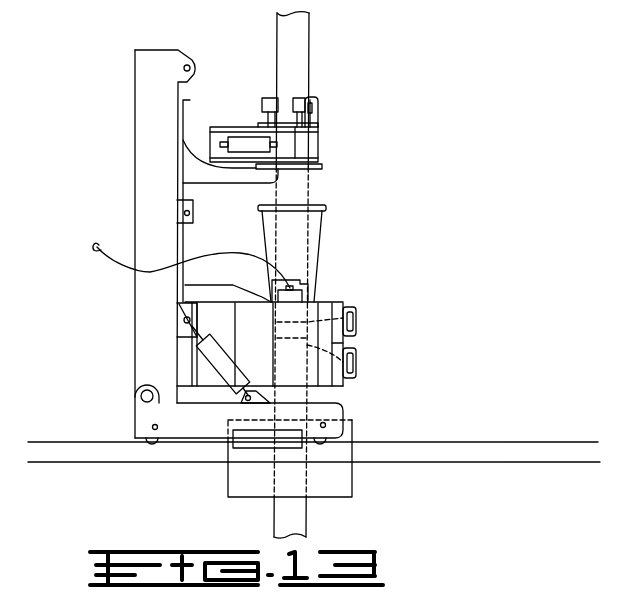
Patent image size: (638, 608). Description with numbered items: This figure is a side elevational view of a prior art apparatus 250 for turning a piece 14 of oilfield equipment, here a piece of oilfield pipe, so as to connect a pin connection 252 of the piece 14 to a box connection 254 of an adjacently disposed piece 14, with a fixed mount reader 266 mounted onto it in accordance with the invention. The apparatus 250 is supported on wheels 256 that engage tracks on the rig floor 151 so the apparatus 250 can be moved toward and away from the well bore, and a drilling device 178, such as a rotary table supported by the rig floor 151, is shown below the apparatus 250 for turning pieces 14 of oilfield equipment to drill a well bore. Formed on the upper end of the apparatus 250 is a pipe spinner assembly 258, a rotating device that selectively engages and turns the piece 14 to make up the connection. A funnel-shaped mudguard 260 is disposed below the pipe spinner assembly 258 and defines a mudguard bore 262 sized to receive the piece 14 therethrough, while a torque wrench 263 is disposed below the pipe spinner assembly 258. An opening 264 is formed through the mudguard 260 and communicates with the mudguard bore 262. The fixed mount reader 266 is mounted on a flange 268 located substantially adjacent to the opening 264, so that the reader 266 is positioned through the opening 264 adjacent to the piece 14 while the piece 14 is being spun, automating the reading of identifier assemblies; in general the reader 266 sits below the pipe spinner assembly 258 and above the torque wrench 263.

The piece of oilfield equipment 14 is at (311, 41).
The apparatus 250 is at (368, 107).
The pipe spinner assembly 258 is at (320, 150).
The mudguard bore 262 is at (325, 200).
The mudguard 260 is at (324, 216).
The opening 264 is at (318, 280).
The fixed mount reader 266 is at (320, 298).
The flange 268 is at (335, 302).
The torque wrench 263 is at (355, 350).
The pin connection 252 is at (357, 321).
The box connection 254 is at (357, 360).
The rig floor 151 is at (430, 442).
The wheels 256 is at (152, 445).
The drilling device 178 is at (240, 497).